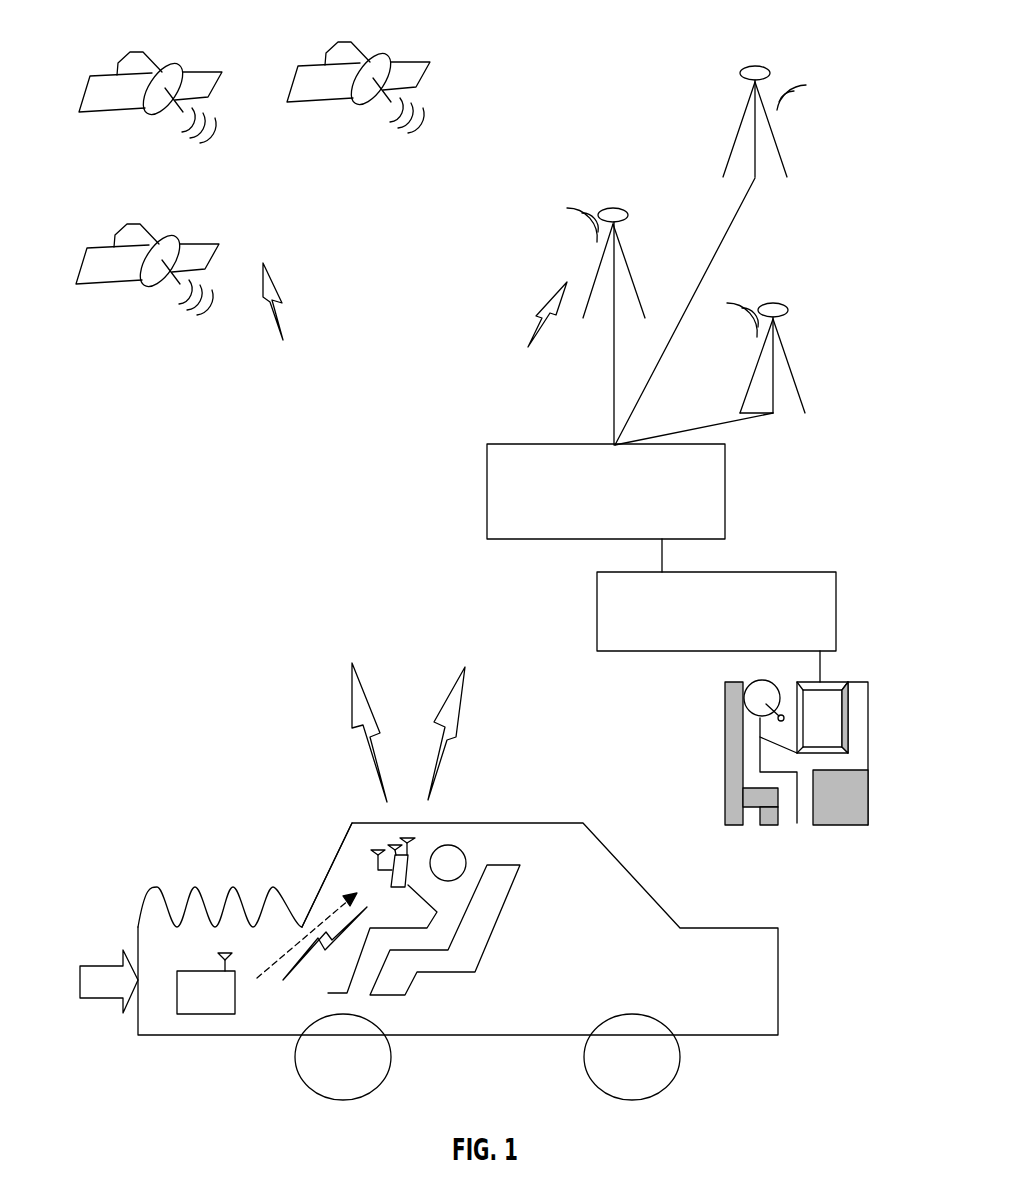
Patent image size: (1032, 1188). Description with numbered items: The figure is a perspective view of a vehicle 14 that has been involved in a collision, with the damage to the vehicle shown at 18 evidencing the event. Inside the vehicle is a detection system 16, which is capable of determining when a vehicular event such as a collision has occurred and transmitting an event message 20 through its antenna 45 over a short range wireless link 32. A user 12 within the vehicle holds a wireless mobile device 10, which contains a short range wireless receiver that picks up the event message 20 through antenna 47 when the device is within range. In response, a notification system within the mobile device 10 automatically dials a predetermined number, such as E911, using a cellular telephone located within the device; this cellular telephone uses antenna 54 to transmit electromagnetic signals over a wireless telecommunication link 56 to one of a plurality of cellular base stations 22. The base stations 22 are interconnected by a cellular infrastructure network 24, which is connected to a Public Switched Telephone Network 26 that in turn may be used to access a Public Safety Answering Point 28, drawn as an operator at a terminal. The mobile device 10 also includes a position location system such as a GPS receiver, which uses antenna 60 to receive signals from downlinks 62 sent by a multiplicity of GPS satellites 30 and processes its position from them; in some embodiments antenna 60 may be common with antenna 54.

The wireless mobile device 10 is at (393, 888).
The user 12 is at (468, 855).
The vehicle 14 is at (643, 885).
The detection system 16 is at (197, 1014).
The damage to the vehicle 18 is at (215, 875).
The event message 20 is at (313, 927).
The cellular base stations 22 is at (771, 278).
The cellular infrastructure network 24 is at (487, 476).
The Public Switched Telephone Network 26 is at (597, 603).
The Public Safety Answering Point 28 is at (857, 670).
The GPS satellites 30 is at (162, 140).
The wireless link 32 is at (293, 980).
The antenna 45 is at (228, 952).
The antenna 47 is at (371, 856).
The antenna 54 is at (410, 836).
The wireless telecommunication link 56 is at (537, 317).
The antenna 60 is at (396, 843).
The downlinks 62 is at (280, 288).